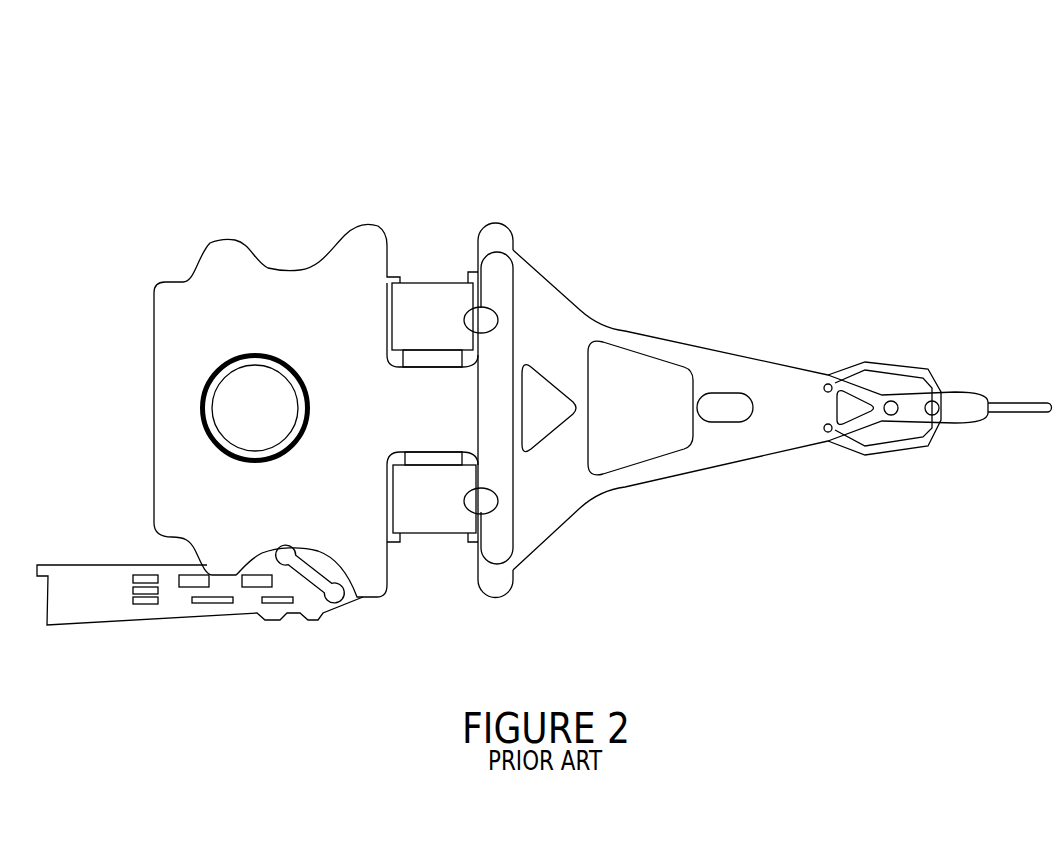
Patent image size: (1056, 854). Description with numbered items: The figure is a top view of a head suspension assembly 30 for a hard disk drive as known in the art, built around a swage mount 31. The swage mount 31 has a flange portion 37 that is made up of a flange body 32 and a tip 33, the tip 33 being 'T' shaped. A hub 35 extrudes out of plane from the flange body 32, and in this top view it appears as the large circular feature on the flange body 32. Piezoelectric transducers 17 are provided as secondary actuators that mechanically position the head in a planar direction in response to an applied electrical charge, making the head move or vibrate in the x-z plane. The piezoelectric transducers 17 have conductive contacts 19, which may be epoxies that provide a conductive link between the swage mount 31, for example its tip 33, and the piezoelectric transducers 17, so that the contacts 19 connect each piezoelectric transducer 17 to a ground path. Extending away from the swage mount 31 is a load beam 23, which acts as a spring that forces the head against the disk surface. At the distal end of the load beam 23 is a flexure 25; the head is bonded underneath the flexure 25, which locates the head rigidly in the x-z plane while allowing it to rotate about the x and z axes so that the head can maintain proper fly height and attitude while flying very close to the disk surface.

The head suspension assembly 30 is at (314, 98).
The swage mount 31 is at (263, 196).
The flange portion 37 is at (168, 497).
The hub 35 is at (200, 403).
The flange body 32 is at (380, 634).
The tip 33 is at (528, 611).
The piezoelectric transducer 17 is at (421, 288).
The conductive contact 19 is at (470, 325).
The load beam 23 is at (735, 372).
The flexure 25 is at (887, 372).